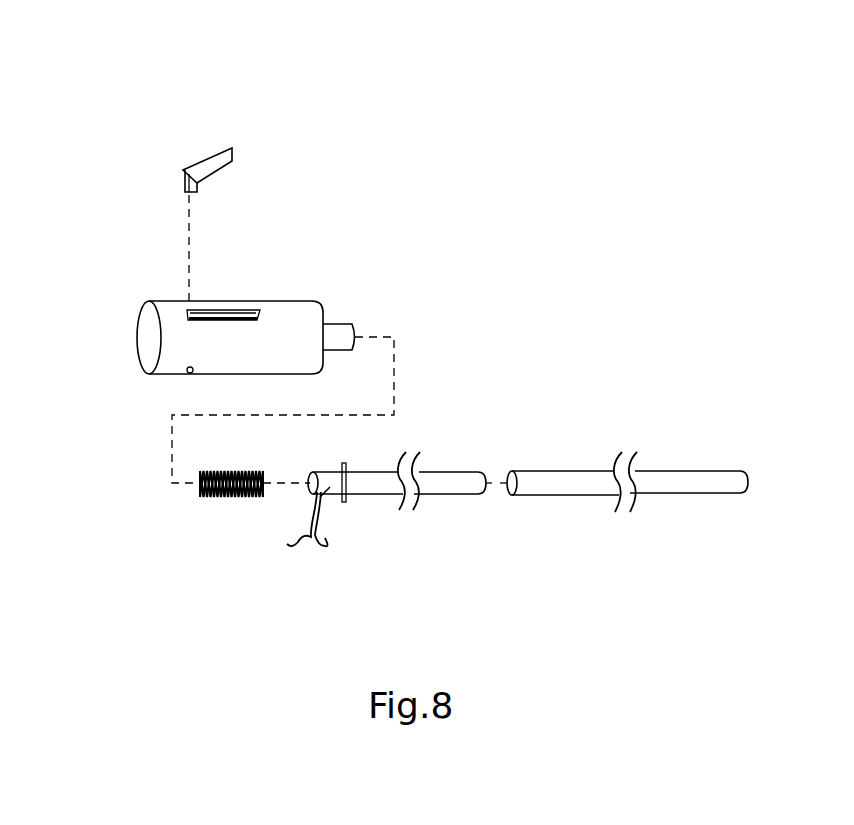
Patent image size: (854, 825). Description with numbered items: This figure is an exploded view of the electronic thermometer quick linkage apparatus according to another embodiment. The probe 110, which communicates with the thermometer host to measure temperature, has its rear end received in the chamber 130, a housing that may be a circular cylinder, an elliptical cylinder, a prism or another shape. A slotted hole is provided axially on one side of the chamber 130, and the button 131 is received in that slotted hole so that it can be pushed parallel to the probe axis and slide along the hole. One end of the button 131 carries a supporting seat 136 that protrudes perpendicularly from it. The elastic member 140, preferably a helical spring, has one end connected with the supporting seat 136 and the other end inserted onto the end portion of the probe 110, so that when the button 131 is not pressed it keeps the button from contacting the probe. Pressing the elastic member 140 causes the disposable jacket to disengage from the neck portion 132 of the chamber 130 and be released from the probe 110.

The probe 110 is at (442, 483).
The chamber 130 is at (235, 330).
The button 131 is at (208, 163).
The neck portion 132 is at (343, 342).
The supporting seat 136 is at (185, 180).
The elastic member 140 is at (225, 497).